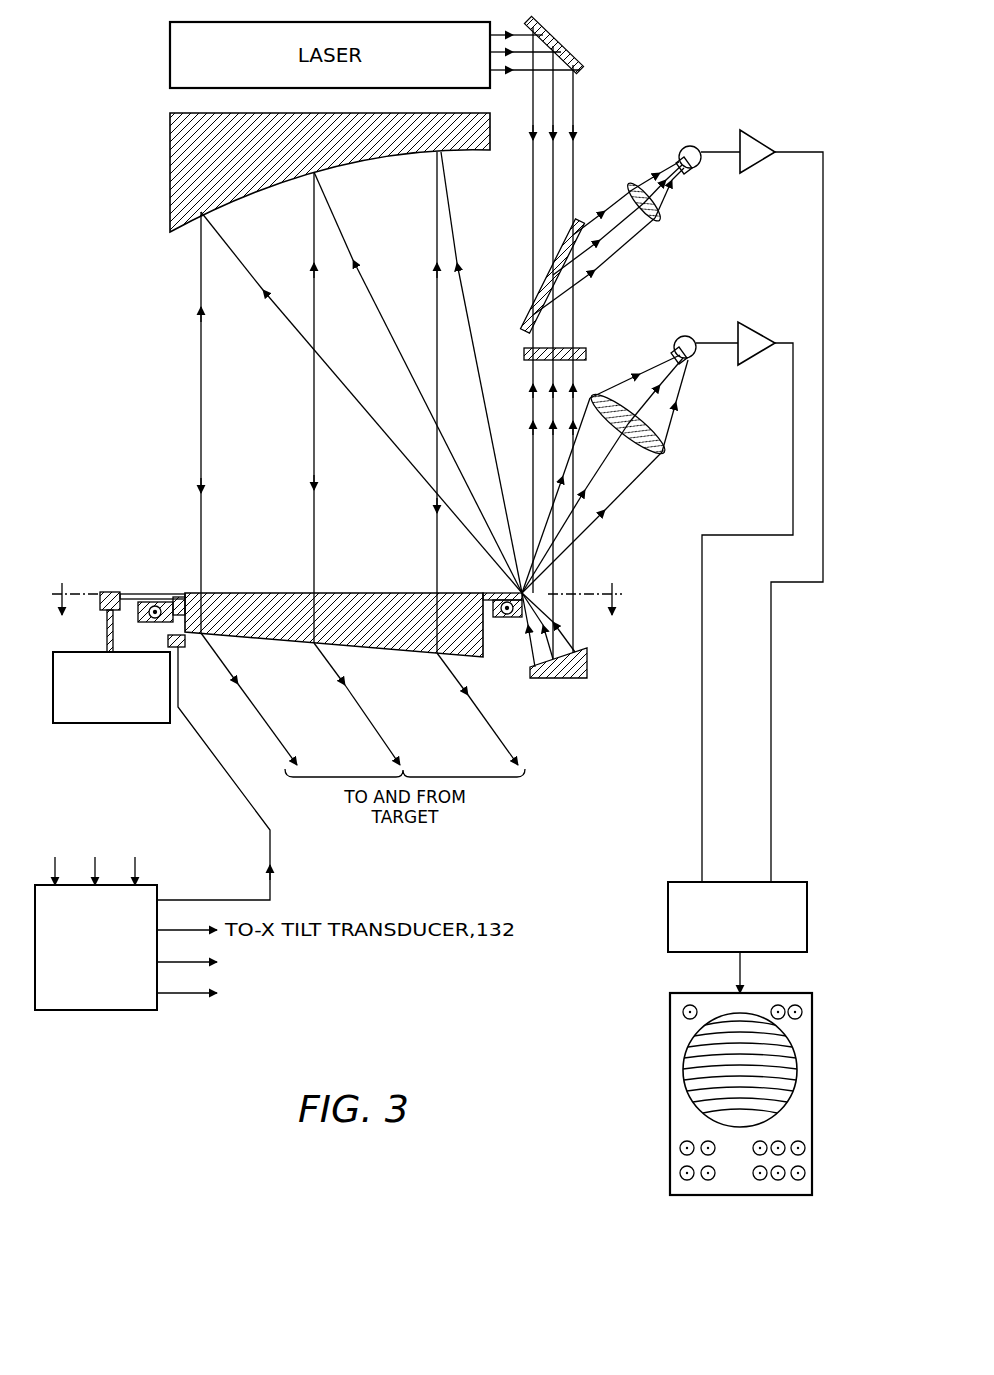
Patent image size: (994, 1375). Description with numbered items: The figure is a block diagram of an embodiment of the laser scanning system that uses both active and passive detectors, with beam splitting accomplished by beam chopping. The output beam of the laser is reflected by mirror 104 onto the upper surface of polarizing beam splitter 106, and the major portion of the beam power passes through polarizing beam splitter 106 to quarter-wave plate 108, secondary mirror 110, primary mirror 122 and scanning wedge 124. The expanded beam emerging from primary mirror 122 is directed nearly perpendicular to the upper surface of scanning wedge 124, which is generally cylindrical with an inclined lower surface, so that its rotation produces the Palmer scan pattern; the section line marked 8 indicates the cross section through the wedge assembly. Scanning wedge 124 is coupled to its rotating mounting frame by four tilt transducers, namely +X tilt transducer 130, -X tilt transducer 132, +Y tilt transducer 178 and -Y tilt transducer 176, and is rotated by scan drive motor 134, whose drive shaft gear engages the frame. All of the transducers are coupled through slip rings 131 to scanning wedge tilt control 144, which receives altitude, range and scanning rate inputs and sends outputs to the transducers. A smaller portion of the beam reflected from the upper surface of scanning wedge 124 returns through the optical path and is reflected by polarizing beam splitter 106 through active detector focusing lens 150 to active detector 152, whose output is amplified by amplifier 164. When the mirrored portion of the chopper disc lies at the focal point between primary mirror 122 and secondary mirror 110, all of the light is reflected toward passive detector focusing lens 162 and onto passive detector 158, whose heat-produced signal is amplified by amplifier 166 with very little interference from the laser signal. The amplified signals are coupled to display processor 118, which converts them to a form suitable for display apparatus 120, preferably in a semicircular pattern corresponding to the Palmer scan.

The mirror 104 is at (573, 46).
The polarizing beam splitter 106 is at (546, 298).
The quarter-wave plate 108 is at (524, 354).
The secondary mirror 110 is at (566, 680).
The display processor 118 is at (796, 882).
The display apparatus 120 is at (676, 1197).
The primary mirror 122 is at (443, 151).
The scanning wedge 124 is at (275, 594).
The +X tilt transducer 130 is at (178, 597).
The slip rings 131 is at (180, 648).
The -X tilt transducer 132 is at (487, 593).
The scan drive motor 134 is at (68, 652).
The scanning wedge tilt control 144 is at (78, 1012).
The active detector focusing lens 150 is at (657, 217).
The active detector 152 is at (678, 157).
The passive detector 158 is at (693, 360).
The passive detector focusing lens 162 is at (663, 449).
The amplifier 164 is at (753, 140).
The amplifier 166 is at (762, 338).
The -Y tilt transducer 176 is at (336, 962).
The +Y tilt transducer 178 is at (336, 994).
The section line 8- 8 is at (337, 589).